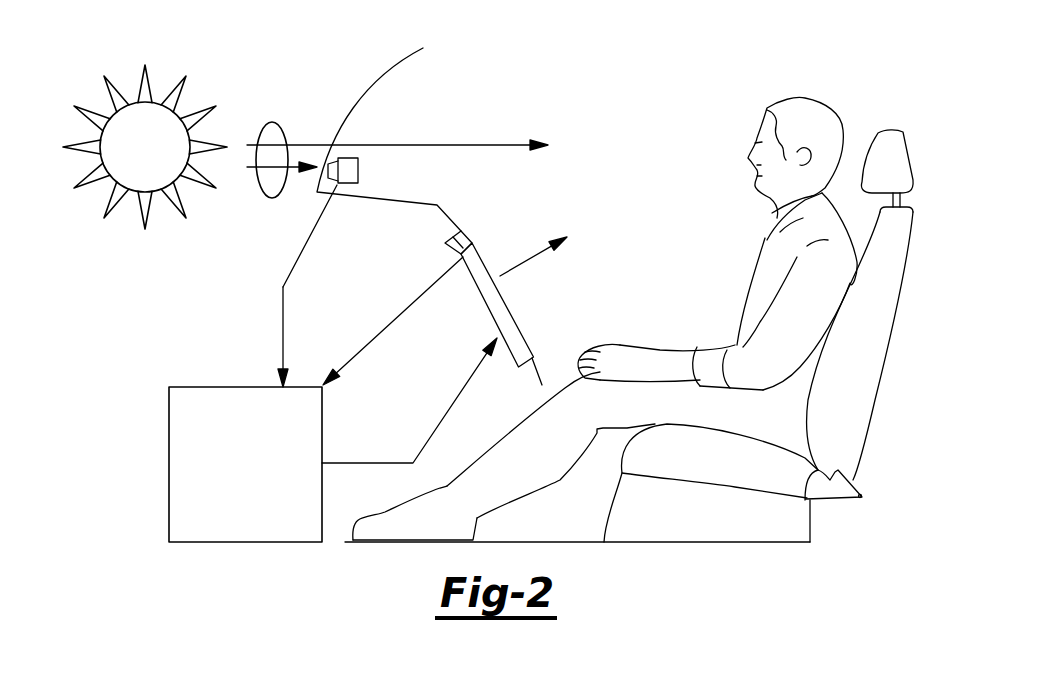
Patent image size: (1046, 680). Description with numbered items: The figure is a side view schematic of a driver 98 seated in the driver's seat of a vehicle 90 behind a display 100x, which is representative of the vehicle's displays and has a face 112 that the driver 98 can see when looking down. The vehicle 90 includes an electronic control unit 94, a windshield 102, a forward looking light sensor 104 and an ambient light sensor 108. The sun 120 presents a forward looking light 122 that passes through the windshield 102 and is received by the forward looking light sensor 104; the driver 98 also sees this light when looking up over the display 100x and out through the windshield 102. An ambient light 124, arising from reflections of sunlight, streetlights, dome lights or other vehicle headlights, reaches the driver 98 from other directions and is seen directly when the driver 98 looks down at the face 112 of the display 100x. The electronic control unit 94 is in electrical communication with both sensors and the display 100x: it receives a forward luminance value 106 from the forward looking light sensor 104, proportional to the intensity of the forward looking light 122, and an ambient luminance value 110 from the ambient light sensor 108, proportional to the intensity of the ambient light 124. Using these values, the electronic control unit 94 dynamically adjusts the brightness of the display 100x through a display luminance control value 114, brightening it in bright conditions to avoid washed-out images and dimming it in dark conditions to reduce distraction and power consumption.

The vehicle 90 is at (629, 80).
The electronic control unit 94 is at (213, 387).
The driver 98 is at (837, 110).
The display 100x is at (484, 308).
The windshield 102 is at (400, 60).
The forward looking light sensor 104 is at (358, 170).
The forward luminance value 106 is at (283, 315).
The ambient light sensor 108 is at (468, 239).
The ambient luminance value 110 is at (417, 307).
The face 112 is at (515, 312).
The display luminance control value 114 is at (347, 463).
The sun 120 is at (128, 102).
The forward looking light 122 is at (273, 122).
The ambient light 124 is at (523, 256).